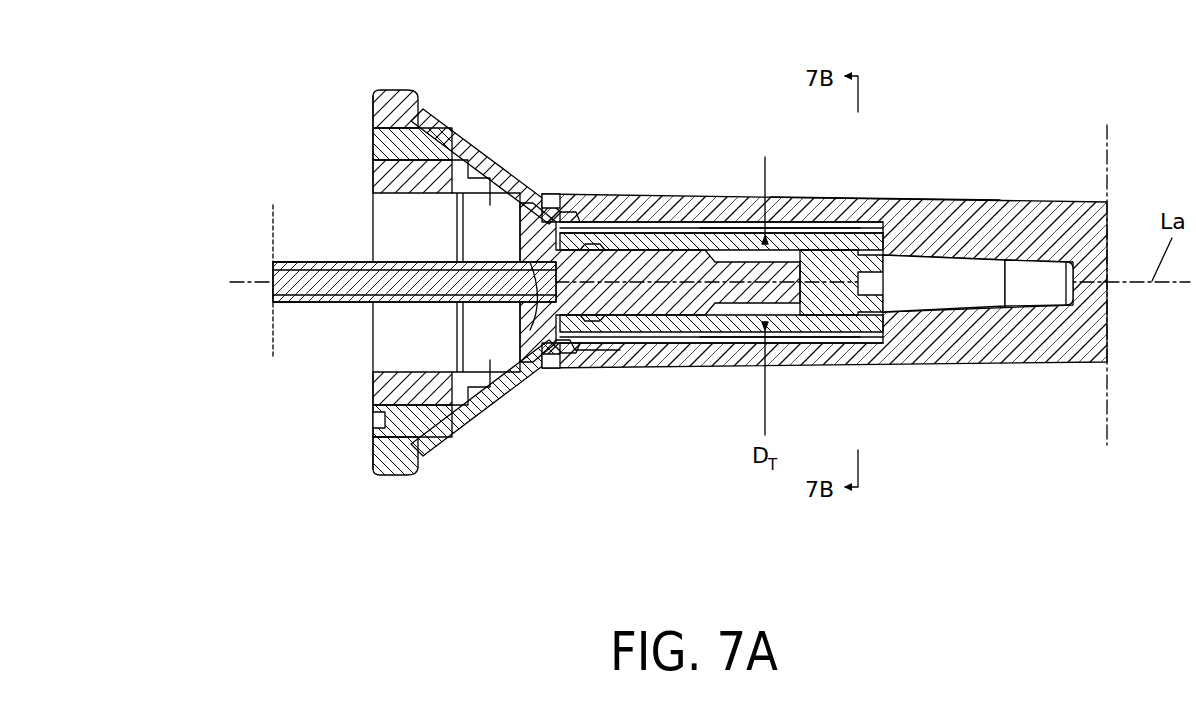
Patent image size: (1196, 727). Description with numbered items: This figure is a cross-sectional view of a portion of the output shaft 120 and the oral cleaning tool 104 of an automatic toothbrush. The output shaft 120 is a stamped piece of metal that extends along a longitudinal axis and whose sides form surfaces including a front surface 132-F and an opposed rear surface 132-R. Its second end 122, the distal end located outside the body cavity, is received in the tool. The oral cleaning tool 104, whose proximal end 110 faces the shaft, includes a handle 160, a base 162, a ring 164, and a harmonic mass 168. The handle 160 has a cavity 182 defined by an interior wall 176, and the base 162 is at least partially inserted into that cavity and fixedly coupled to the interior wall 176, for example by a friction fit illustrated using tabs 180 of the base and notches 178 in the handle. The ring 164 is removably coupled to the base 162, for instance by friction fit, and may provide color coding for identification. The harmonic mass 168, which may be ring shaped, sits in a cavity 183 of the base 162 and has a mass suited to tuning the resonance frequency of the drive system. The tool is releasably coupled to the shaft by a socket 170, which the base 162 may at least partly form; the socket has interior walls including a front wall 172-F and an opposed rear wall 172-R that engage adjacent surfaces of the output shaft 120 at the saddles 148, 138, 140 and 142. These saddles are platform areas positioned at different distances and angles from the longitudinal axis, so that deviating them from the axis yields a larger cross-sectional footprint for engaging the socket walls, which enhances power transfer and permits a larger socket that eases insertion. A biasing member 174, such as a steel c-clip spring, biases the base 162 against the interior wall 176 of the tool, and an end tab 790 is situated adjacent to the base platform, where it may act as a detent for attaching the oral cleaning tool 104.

The oral cleaning tool 104 is at (622, 193).
The proximal end 110 is at (373, 427).
The output shaft 120 is at (282, 278).
The second end 122 is at (880, 248).
The front surface 132-F is at (275, 260).
The rear surface 132-R is at (275, 304).
The saddle 138 is at (732, 345).
The saddle 140 is at (692, 232).
The saddle 142 is at (526, 338).
The saddle 148 is at (852, 228).
The handle 160 is at (808, 197).
The base 162 is at (440, 116).
The ring 164 is at (398, 88).
The harmonic mass 168 is at (373, 167).
The socket 170 is at (540, 260).
The front wall 172-F is at (613, 249).
The rear wall 172-R is at (583, 311).
The biasing member 174 is at (736, 232).
The interior wall 176 is at (1008, 258).
The notches 178 is at (648, 221).
The tabs 180 is at (602, 221).
The cavity 182 is at (1032, 265).
The cavity 183 is at (385, 347).
The end tab 790 is at (580, 350).